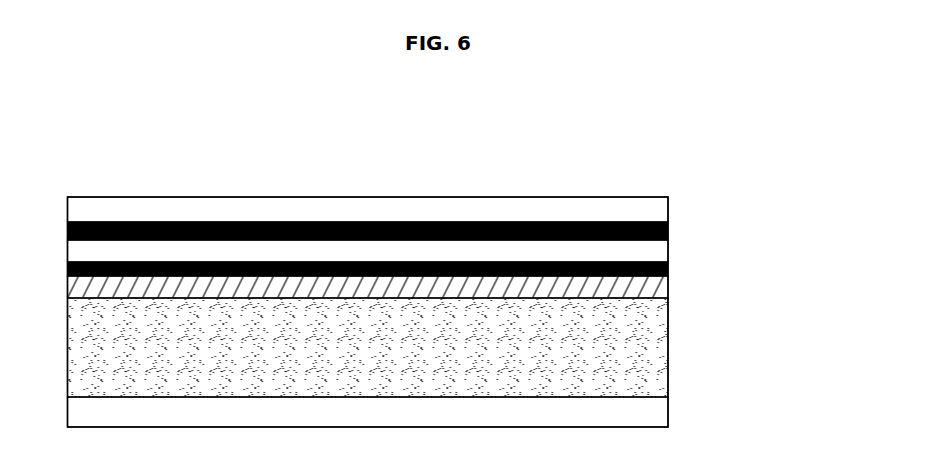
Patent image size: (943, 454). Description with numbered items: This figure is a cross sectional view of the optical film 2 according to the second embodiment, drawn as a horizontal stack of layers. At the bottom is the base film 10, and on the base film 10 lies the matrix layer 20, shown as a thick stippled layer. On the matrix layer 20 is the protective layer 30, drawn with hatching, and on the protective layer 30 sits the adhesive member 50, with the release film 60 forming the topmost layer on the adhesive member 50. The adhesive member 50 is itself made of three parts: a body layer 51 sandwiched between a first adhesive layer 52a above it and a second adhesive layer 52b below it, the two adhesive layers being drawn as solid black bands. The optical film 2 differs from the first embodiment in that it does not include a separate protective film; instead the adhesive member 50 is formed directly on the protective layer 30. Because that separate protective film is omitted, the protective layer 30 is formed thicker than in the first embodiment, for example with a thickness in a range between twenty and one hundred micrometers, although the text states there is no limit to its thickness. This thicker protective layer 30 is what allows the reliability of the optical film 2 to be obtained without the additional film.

The optical film 2 is at (108, 124).
The base film 10 is at (657, 412).
The matrix layer 20 is at (657, 352).
The protective layer 30 is at (656, 289).
The adhesive member 50 is at (425, 246).
The body layer 51 is at (660, 248).
The first adhesive layer 52a is at (667, 232).
The second adhesive layer 52b is at (667, 269).
The release film 60 is at (657, 212).